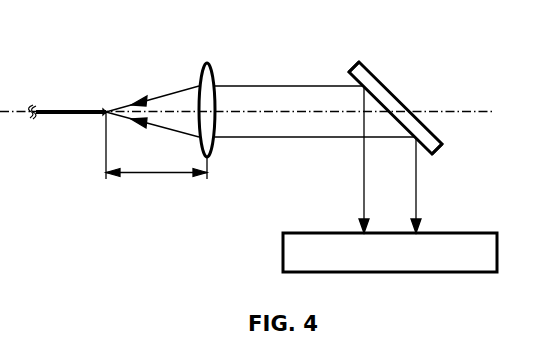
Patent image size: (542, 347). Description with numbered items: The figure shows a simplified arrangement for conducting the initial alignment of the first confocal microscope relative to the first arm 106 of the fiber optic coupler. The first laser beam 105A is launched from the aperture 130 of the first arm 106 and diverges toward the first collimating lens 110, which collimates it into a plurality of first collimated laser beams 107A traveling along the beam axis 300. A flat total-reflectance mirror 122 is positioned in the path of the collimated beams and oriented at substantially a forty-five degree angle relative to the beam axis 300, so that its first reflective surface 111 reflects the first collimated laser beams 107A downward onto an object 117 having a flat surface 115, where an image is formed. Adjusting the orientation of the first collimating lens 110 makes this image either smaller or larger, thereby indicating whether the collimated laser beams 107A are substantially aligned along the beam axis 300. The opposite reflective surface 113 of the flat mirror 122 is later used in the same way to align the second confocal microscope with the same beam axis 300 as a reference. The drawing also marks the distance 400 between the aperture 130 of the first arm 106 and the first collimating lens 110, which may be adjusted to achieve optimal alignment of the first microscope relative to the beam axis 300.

The first arm 106 is at (83, 110).
The aperture 130 is at (103, 115).
The first laser beam 105A is at (171, 100).
The first collimated laser beams 107A is at (245, 136).
The first collimating lens 110 is at (215, 82).
The distance 400 is at (152, 173).
The first reflective surface 111 is at (349, 78).
The opposite reflective surface 113 is at (393, 88).
The flat total-reflectance mirror 122 is at (435, 143).
The flat surface 115 is at (387, 232).
The object 117 is at (283, 252).
The beam axis 300 is at (477, 108).